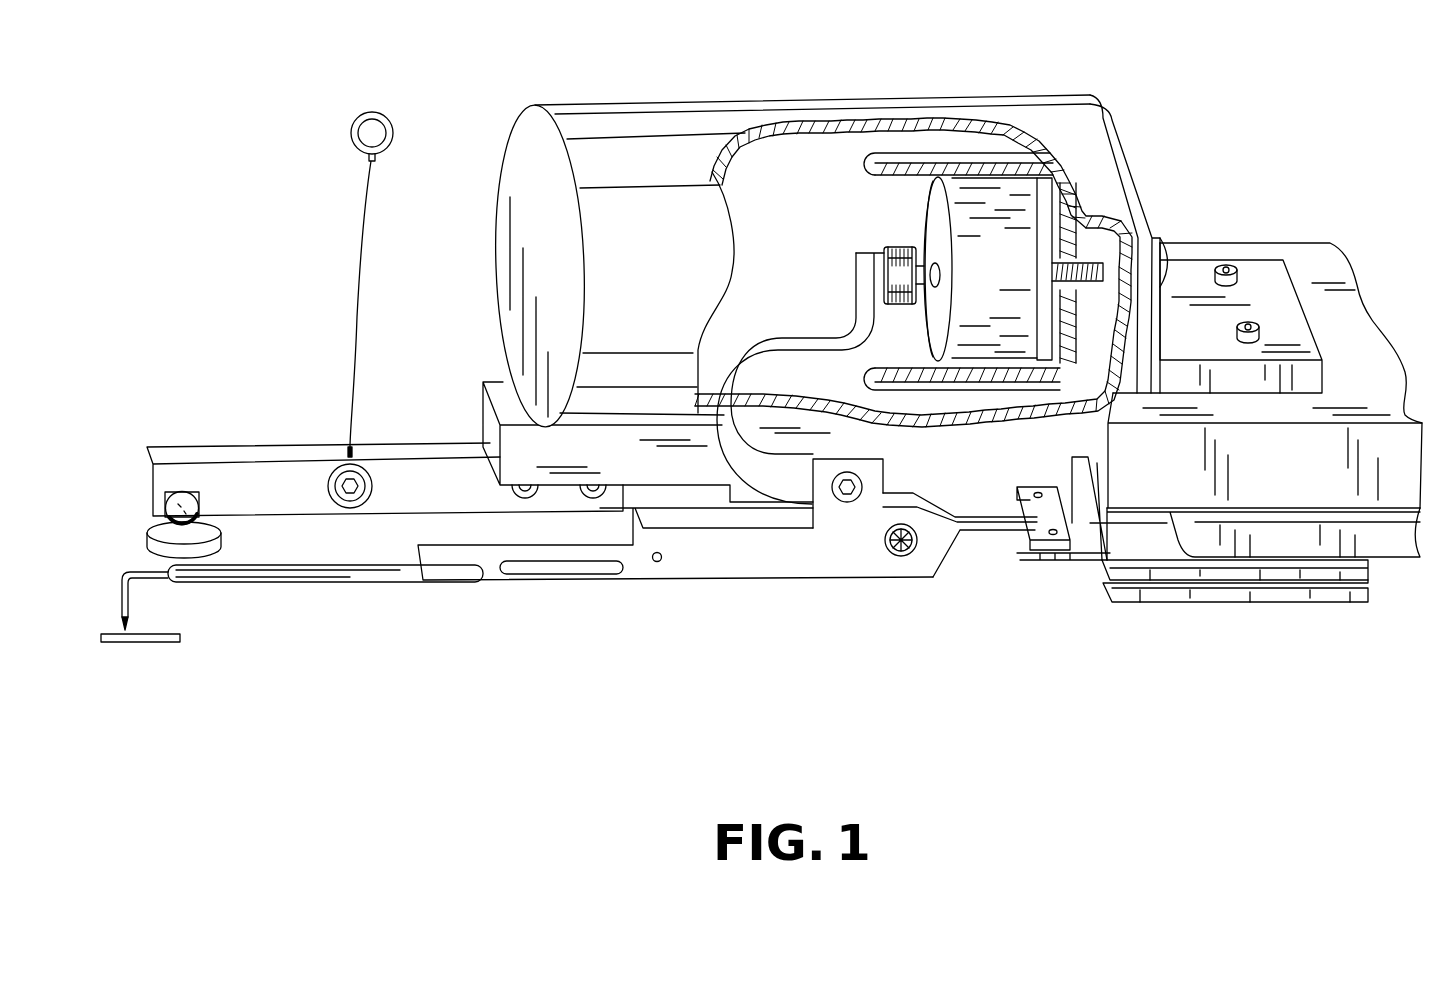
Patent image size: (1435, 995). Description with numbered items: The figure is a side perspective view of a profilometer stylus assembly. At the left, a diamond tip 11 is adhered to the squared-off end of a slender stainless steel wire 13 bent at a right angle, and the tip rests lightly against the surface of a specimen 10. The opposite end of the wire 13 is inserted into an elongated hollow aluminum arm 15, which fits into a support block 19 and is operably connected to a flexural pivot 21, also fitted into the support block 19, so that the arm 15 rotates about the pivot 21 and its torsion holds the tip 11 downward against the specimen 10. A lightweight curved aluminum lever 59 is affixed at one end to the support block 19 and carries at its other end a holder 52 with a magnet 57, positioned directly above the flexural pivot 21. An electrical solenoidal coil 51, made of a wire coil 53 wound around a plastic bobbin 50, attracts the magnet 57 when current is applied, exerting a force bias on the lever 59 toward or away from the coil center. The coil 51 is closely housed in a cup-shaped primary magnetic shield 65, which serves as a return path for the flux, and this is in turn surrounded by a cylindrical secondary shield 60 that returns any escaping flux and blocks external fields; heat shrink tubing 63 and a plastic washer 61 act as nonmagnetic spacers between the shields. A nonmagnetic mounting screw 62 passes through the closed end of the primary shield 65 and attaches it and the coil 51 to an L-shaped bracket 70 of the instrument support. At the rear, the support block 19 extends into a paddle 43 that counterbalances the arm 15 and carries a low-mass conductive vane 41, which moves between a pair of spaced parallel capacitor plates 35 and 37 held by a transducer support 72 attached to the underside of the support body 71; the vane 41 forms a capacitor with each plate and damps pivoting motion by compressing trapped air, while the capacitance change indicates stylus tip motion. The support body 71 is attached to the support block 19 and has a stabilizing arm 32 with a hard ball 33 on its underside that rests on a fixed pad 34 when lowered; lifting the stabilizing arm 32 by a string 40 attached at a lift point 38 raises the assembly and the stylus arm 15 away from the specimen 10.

The specimen 10 is at (122, 645).
The diamond tip 11 is at (123, 626).
The stainless steel wire 13 is at (150, 584).
The aluminum arm 15 is at (368, 583).
The support block 19 is at (744, 582).
The flexural pivot 21 is at (892, 554).
The stabilizing arm 32 is at (295, 448).
The hard ball 33 is at (165, 508).
The pad 34 is at (160, 530).
The capacitor plate 35 is at (1366, 600).
The capacitor plate 37 is at (1288, 596).
The lift point 38 is at (384, 466).
The string 40 is at (366, 240).
The vane 41 is at (1045, 562).
The paddle 43 is at (963, 532).
The plastic bobbin 50 is at (928, 324).
The solenoidal coil 51 is at (914, 208).
The holder 52 is at (884, 258).
The wire coil 53 is at (984, 287).
The magnet 57 is at (904, 247).
The aluminum lever 59 is at (854, 290).
The secondary shield 60 is at (628, 103).
The plastic washer 61 is at (1108, 377).
The mounting screw 62 is at (1163, 248).
The heat shrink tubing 63 is at (868, 156).
The primary magnetic shield 65 is at (876, 378).
The L-shaped bracket 70 is at (1262, 260).
The support body 71 is at (1332, 243).
The transducer support 72 is at (1402, 560).